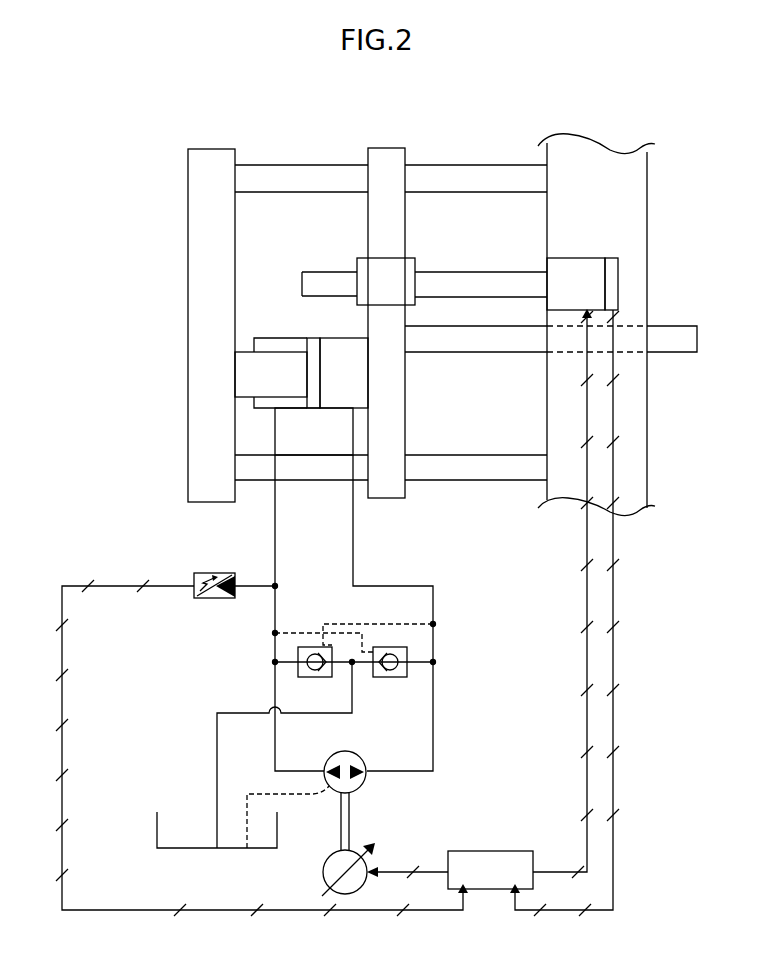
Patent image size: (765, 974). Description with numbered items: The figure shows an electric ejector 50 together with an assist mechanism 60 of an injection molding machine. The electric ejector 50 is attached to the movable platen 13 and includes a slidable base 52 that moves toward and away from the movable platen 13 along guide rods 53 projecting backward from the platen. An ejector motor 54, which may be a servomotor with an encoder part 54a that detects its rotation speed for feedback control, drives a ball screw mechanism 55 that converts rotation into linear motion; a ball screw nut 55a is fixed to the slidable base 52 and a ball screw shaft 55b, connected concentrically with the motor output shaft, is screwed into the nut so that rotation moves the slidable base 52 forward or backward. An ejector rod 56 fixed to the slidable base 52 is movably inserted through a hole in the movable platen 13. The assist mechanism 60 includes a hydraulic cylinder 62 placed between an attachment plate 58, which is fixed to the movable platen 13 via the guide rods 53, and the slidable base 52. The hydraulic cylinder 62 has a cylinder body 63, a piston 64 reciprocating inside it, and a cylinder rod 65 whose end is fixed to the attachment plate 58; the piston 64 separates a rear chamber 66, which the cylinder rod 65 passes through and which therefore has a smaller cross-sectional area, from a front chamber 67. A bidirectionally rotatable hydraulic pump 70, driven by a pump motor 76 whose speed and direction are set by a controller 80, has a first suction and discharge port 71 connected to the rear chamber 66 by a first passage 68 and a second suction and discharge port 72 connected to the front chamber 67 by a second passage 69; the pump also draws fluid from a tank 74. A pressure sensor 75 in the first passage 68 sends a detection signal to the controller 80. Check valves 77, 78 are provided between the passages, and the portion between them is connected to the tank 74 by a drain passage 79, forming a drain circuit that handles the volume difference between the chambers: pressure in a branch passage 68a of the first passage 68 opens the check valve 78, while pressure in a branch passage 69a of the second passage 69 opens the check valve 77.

The movable platen 13 is at (603, 150).
The electric ejector 50 is at (206, 140).
The slidable base 52 is at (388, 148).
The guide rods 53 is at (328, 163).
The ejector motor 54 is at (566, 258).
The encoder part 54a is at (610, 258).
The ball screw mechanism 55 is at (424, 249).
The ball screw nut 55a is at (400, 271).
The ball screw shaft 55b is at (466, 285).
The ejector rod 56 is at (477, 351).
The attachment plate 58 is at (198, 256).
The assist mechanism 60 is at (76, 570).
The hydraulic cylinder 62 is at (301, 358).
The cylinder body 63 is at (296, 410).
The piston 64 is at (313, 338).
The cylinder rod 65 is at (250, 390).
The rear chamber 66 is at (270, 338).
The front chamber 67 is at (340, 338).
The first passage 68 is at (275, 545).
The branch passage 68a is at (303, 633).
The second passage 69 is at (353, 543).
The branch passage 69a is at (433, 624).
The hydraulic pump 70 is at (327, 792).
The first suction and discharge port 71 is at (325, 765).
The second suction and discharge port 72 is at (366, 765).
The tank 74 is at (157, 830).
The pressure sensor 75 is at (216, 598).
The pump motor 76 is at (373, 865).
The check valve 77 is at (316, 677).
The check valve 78 is at (391, 677).
The drain passage 79 is at (237, 712).
The controller 80 is at (490, 851).